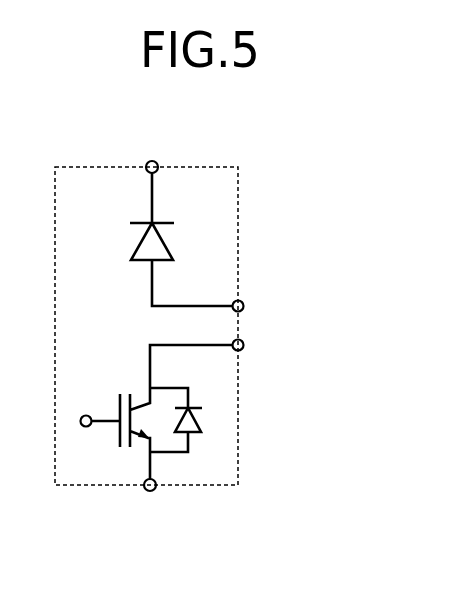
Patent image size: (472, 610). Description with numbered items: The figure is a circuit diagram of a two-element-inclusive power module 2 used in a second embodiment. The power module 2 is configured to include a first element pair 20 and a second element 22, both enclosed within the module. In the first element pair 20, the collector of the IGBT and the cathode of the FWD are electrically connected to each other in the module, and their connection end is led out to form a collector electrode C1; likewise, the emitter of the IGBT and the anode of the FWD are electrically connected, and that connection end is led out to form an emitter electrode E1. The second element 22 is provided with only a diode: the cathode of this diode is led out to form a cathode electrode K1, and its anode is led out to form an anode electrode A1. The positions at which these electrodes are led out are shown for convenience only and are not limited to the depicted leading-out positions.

The power module 2 is at (224, 165).
The second element 22 is at (182, 246).
The first element pair 20 is at (218, 421).
The cathode electrode K1 is at (151, 153).
The anode electrode A1 is at (255, 308).
The collector electrode C1 is at (255, 346).
The emitter electrode E1 is at (150, 501).